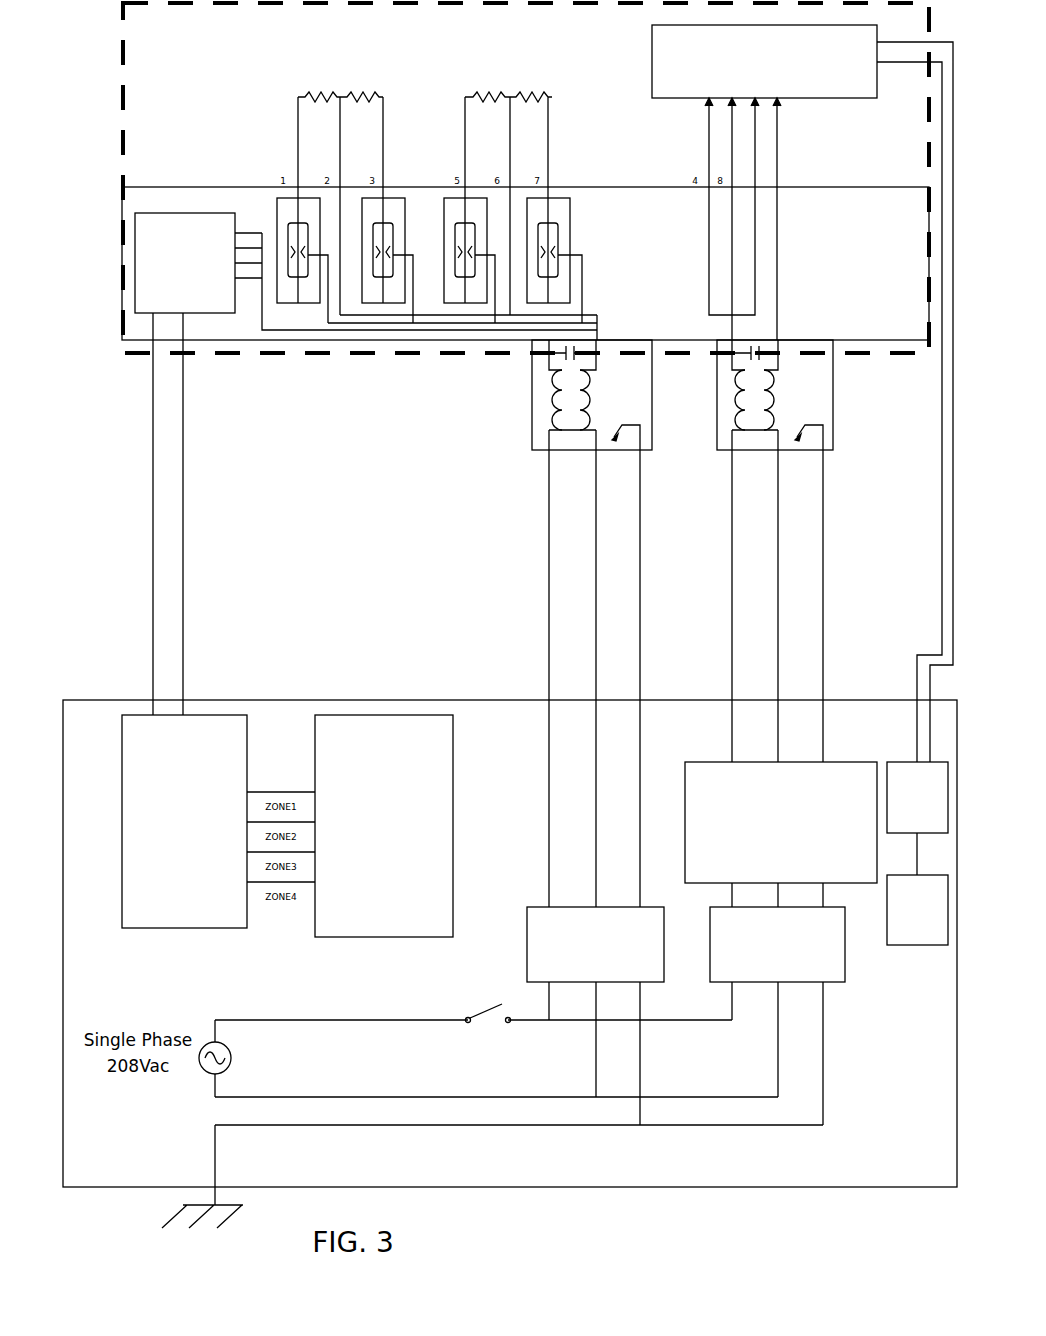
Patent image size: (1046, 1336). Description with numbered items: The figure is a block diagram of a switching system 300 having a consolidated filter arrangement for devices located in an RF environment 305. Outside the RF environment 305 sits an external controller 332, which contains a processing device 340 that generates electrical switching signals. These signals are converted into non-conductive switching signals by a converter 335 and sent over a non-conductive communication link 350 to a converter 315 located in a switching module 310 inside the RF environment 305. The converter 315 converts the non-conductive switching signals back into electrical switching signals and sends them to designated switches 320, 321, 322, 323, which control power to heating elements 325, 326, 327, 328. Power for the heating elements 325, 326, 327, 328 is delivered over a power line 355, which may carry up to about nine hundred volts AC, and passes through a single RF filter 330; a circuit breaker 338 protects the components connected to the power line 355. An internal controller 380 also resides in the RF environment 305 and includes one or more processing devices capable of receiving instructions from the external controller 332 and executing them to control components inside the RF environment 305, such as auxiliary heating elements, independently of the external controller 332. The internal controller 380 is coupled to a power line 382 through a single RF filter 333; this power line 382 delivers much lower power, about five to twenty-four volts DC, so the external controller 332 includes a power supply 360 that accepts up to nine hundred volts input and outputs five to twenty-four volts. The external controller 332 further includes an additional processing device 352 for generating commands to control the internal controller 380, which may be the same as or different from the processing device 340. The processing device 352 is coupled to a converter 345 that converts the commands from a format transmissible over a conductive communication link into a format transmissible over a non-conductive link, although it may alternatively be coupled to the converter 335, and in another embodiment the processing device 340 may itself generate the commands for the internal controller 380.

The switching system 300 is at (790, 1220).
The RF environment 305 is at (113, 100).
The switching module 310 is at (525, 263).
The converter 315 is at (366, 271).
The switch 320 is at (276, 222).
The switch 321 is at (385, 186).
The switch 322 is at (443, 210).
The switch 323 is at (549, 186).
The heating element 325 is at (306, 95).
The heating element 326 is at (353, 94).
The heating element 327 is at (470, 95).
The heating element 328 is at (518, 94).
The RF filter 330 is at (532, 420).
The external controller 332 is at (510, 943).
The RF filter 333 is at (822, 394).
The converter 335 is at (184, 821).
The circuit breaker 338 is at (595, 944).
The processing device 340 is at (580, 848).
The converter 345 is at (917, 797).
The non-conductive communication link 350 is at (183, 515).
The processing device 352 is at (917, 889).
The power line 355 is at (595, 536).
The power supply 360 is at (781, 834).
The internal controller 380 is at (802, 393).
The power line 382 is at (777, 566).